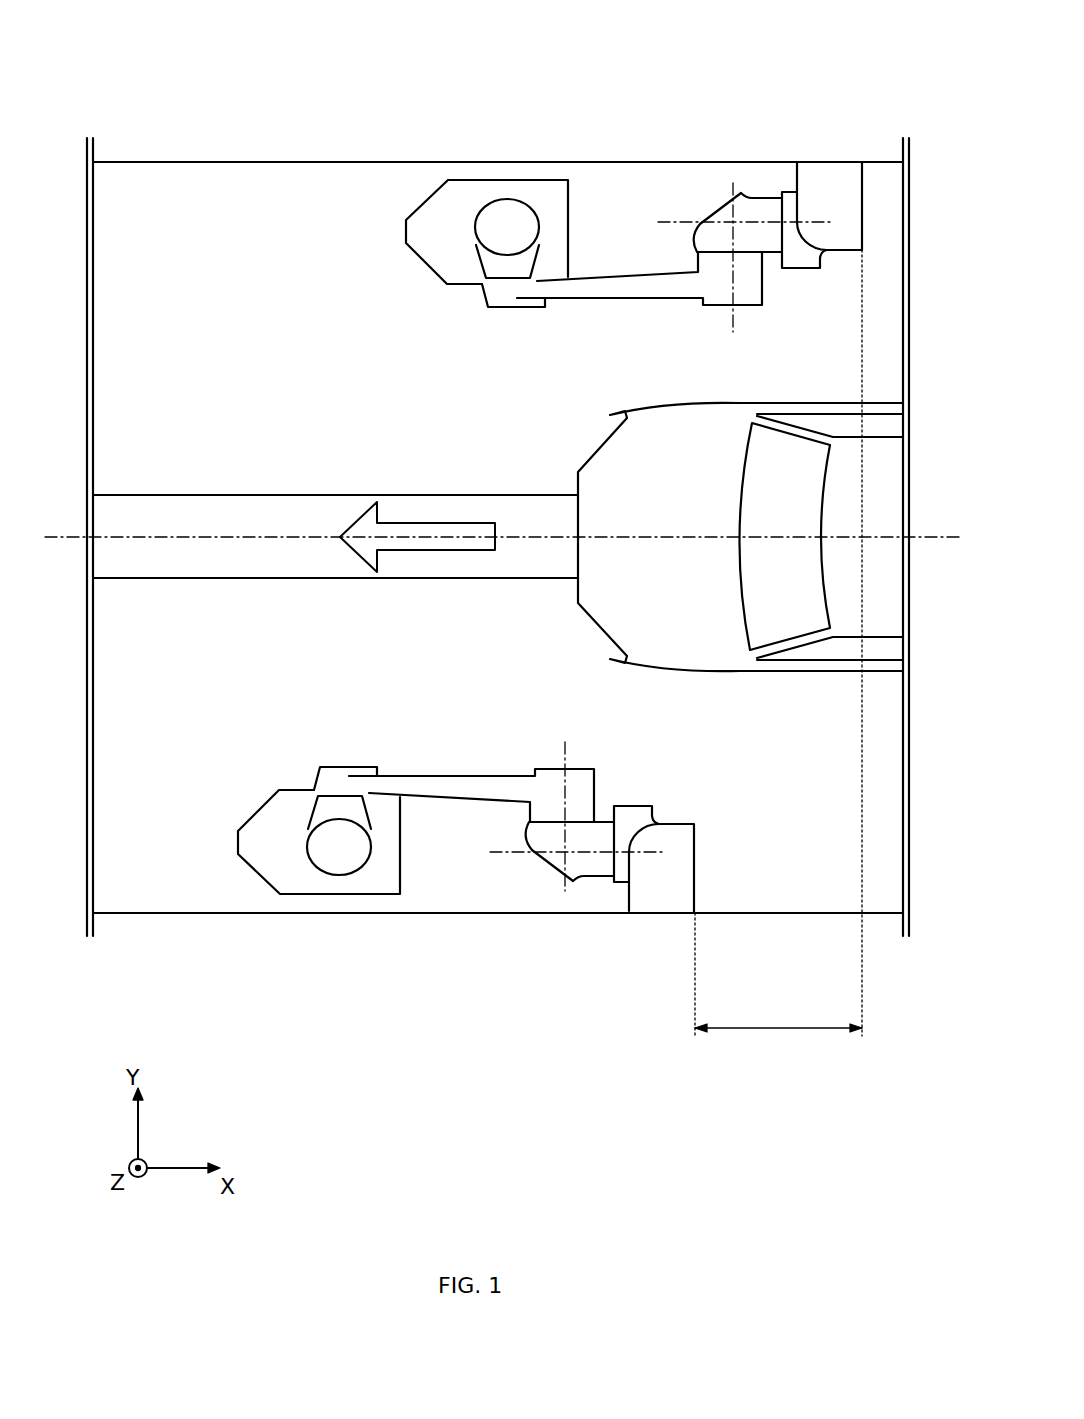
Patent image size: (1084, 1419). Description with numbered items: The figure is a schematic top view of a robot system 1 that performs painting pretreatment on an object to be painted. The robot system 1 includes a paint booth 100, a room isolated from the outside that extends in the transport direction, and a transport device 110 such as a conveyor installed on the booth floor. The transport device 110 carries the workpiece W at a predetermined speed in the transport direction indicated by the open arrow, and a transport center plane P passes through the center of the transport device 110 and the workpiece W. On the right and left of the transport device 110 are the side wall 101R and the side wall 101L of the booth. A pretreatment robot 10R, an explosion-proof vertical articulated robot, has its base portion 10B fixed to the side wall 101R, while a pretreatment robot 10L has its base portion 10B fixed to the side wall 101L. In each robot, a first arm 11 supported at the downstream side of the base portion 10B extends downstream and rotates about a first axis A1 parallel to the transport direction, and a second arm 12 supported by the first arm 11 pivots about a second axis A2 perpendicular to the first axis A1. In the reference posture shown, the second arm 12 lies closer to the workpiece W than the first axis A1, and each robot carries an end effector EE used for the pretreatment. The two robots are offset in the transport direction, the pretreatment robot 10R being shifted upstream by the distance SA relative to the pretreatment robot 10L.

The robot system 1 is at (648, 98).
The paint booth 100 is at (248, 446).
The side wall 101R is at (127, 168).
The side wall 101L is at (163, 887).
The transport device 110 is at (217, 562).
The transport center plane P is at (167, 538).
The workpiece W is at (603, 510).
The pretreatment robot 10R is at (472, 326).
The pretreatment robot 10L is at (445, 744).
The base portion 10B is at (836, 187).
The first arm 11 is at (758, 216).
The second arm 12 is at (620, 297).
The end effector EE is at (432, 238).
The first axis A1 is at (690, 222).
The second axis A2 is at (740, 276).
The offset amount SA is at (778, 658).